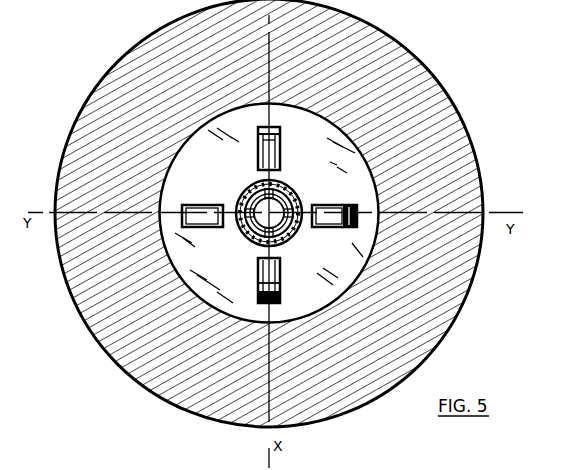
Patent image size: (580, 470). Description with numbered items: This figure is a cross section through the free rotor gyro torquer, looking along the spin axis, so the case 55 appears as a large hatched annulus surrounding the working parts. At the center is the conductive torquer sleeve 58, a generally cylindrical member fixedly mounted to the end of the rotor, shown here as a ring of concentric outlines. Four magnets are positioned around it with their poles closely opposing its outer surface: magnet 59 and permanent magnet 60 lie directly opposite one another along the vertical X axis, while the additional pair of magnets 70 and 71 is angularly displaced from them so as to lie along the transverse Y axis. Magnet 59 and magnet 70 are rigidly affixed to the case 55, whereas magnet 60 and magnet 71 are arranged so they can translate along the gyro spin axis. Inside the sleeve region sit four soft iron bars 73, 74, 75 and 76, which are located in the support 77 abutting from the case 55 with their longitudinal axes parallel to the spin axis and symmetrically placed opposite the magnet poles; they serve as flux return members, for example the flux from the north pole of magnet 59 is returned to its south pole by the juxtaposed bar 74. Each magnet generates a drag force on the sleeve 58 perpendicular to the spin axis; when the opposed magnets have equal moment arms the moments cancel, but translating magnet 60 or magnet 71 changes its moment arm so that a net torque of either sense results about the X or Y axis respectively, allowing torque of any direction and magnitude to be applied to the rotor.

The case 55 is at (410, 95).
The permanent magnet 60 is at (272, 153).
The magnet 59 is at (263, 287).
The magnet 70 is at (202, 207).
The magnet 71 is at (333, 207).
The torquer sleeve 58 is at (280, 191).
The soft iron bar 73 is at (258, 188).
The soft iron bar 75 is at (246, 201).
The soft iron bar 74 is at (286, 244).
The support 77 is at (250, 230).
The soft iron bar 76 is at (301, 228).